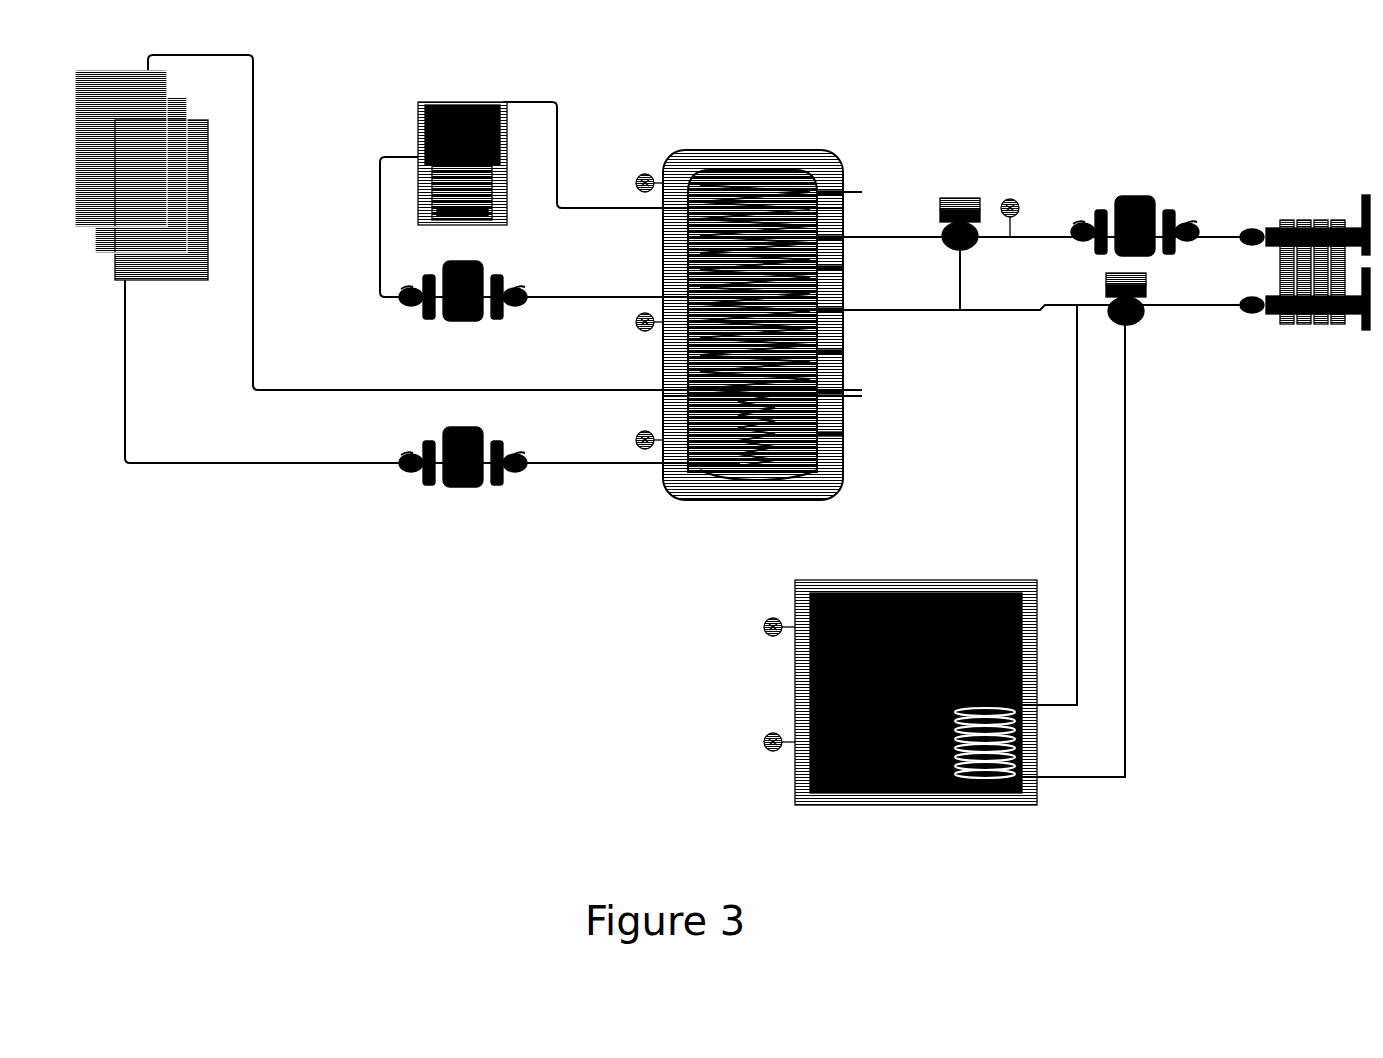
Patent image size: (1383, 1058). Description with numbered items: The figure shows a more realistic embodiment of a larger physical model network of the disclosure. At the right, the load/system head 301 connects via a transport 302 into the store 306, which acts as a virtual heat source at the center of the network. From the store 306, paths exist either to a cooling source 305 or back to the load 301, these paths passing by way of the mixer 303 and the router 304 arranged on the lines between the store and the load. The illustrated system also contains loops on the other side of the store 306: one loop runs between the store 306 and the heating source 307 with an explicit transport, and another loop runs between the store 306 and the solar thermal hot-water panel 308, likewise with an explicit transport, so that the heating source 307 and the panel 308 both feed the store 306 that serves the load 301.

The load/system head 301 is at (1305, 218).
The transport 302 is at (1118, 192).
The mixer 303 is at (952, 195).
The router 304 is at (1148, 326).
The cooling source 305 is at (927, 568).
The store (virtual heat source) 306 is at (742, 147).
The heating source 307 is at (412, 100).
The transport 308 is at (66, 76).